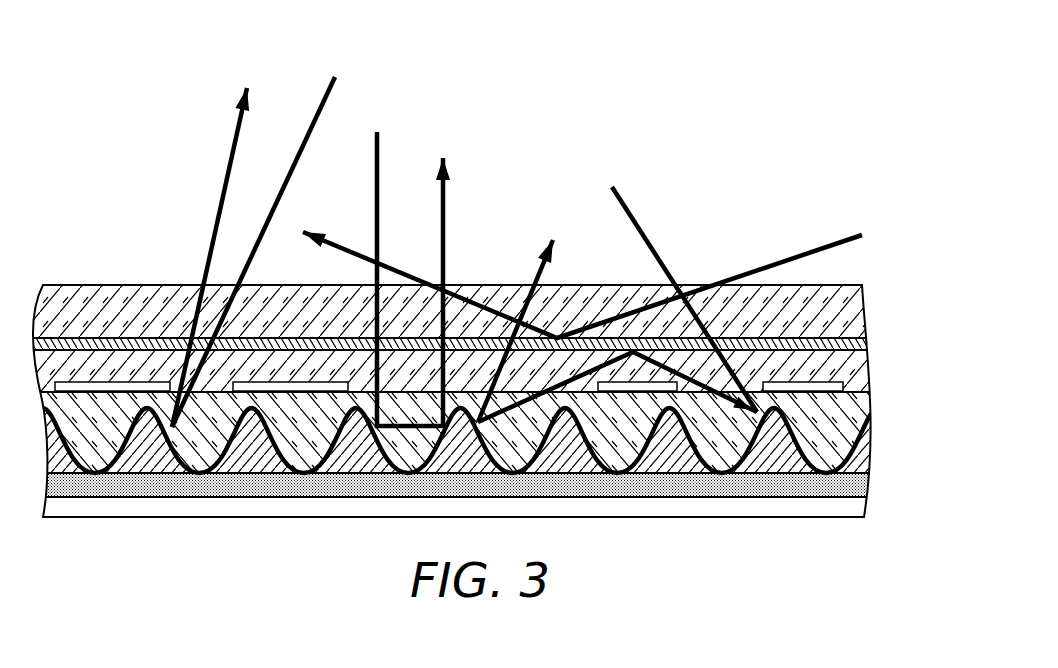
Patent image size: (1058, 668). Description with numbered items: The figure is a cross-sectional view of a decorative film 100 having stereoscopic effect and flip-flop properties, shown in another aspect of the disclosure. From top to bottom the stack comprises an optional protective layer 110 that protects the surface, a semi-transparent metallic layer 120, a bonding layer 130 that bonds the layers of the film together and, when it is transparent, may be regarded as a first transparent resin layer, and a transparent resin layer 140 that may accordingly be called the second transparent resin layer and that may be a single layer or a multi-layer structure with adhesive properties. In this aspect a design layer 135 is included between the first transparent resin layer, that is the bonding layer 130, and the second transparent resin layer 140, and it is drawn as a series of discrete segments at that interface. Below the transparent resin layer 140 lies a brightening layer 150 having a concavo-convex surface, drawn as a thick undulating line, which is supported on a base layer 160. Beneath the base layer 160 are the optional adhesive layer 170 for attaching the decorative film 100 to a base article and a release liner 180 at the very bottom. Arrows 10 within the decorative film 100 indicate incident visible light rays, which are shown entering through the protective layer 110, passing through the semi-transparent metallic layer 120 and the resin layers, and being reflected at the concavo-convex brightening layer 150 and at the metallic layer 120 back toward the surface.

The arrows 10 is at (818, 248).
The decorative film 100 is at (481, 335).
The protective layer 110 is at (867, 293).
The semi-transparent metallic layer 120 is at (866, 333).
The bonding layer 130 is at (862, 358).
The design layer 135 is at (858, 383).
The transparent resin layer 140 is at (848, 405).
The brightening layer 150 is at (850, 443).
The base layer 160 is at (858, 467).
The adhesive layer 170 is at (870, 486).
The release liner 180 is at (863, 512).